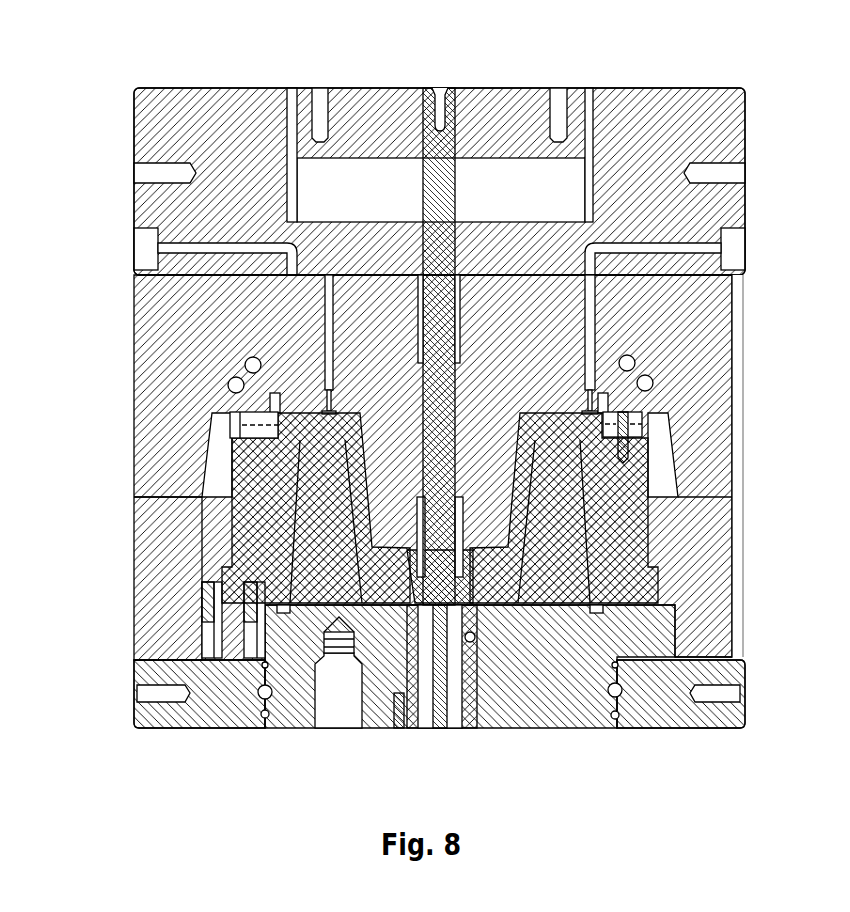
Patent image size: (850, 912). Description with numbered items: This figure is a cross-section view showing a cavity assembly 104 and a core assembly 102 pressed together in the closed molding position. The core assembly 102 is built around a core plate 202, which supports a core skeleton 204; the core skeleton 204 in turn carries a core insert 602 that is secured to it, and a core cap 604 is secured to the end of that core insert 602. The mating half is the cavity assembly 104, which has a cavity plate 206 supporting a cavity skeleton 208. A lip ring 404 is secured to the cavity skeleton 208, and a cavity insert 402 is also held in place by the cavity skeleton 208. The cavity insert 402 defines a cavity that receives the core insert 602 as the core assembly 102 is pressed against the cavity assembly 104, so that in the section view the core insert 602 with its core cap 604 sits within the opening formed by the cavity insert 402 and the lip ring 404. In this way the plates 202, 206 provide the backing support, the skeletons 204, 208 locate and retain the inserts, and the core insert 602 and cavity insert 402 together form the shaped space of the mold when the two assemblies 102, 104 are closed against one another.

The core assembly 102 is at (150, 28).
The cavity assembly 104 is at (156, 770).
The core plate 202 is at (655, 92).
The core skeleton 204 is at (722, 325).
The cavity plate 206 is at (170, 668).
The cavity skeleton 208 is at (160, 548).
The cavity insert 402 is at (235, 525).
The lip ring 404 is at (643, 583).
The core insert 602 is at (565, 540).
The core cap 604 is at (578, 520).